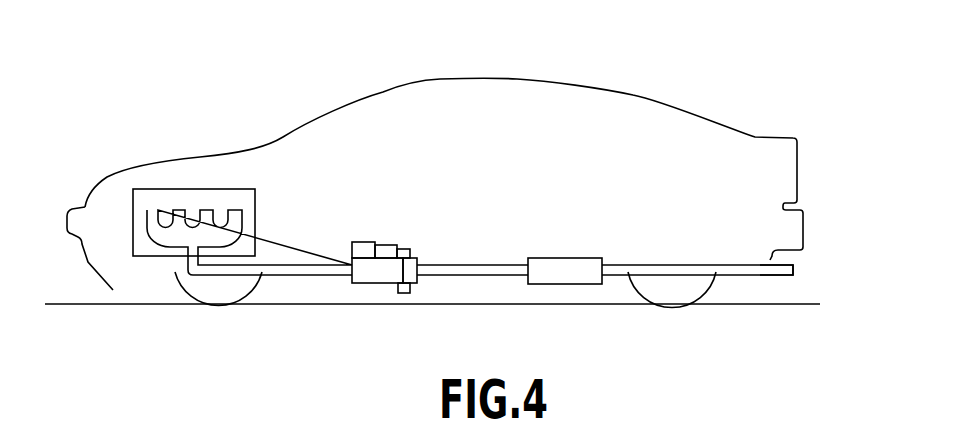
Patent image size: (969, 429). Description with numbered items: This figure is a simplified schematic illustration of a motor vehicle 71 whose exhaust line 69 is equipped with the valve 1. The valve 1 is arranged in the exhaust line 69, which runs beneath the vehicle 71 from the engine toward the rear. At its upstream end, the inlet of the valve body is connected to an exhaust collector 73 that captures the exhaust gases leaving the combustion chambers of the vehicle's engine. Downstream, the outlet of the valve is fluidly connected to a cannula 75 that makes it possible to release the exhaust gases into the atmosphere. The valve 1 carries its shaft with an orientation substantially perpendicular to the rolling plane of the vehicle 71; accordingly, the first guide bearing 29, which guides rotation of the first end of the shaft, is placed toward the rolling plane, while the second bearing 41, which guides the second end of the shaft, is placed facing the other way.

The valve 1 is at (410, 257).
The first guide bearing 29 is at (403, 294).
The second bearing 41 is at (410, 252).
The exhaust line 69 is at (633, 253).
The motor vehicle 71 is at (703, 98).
The exhaust collector 73 is at (147, 223).
The cannula 75 is at (780, 287).